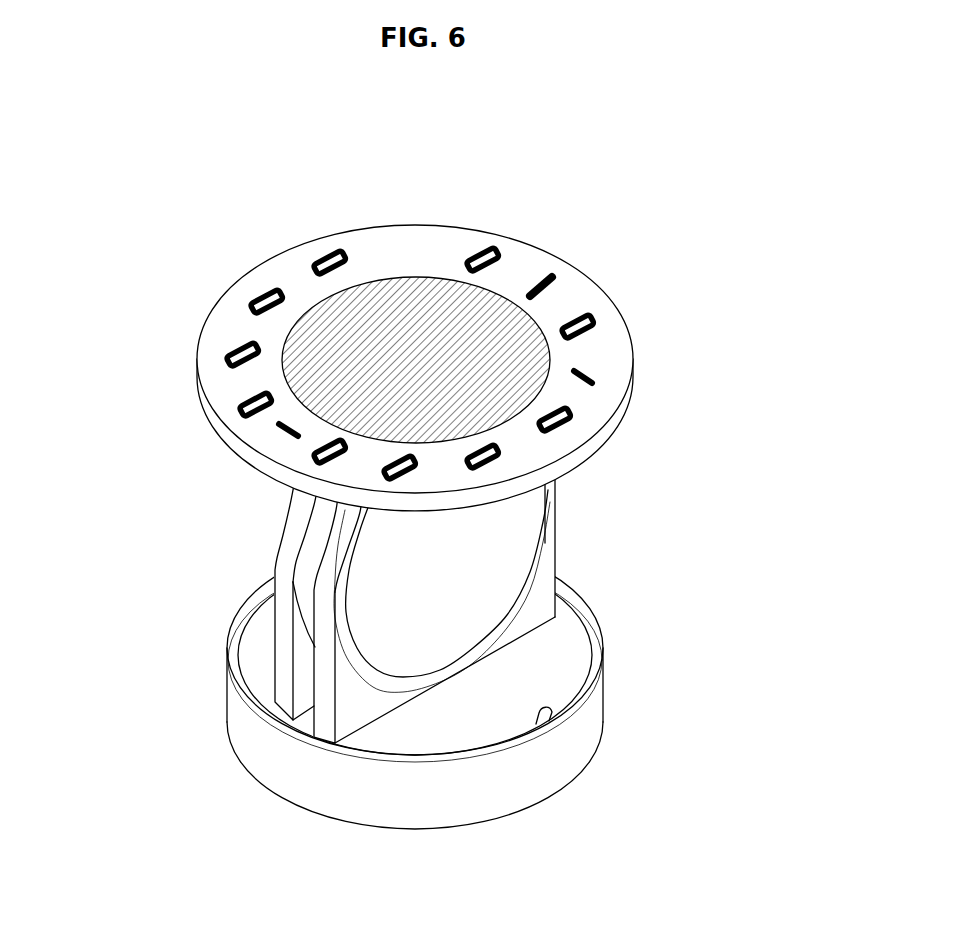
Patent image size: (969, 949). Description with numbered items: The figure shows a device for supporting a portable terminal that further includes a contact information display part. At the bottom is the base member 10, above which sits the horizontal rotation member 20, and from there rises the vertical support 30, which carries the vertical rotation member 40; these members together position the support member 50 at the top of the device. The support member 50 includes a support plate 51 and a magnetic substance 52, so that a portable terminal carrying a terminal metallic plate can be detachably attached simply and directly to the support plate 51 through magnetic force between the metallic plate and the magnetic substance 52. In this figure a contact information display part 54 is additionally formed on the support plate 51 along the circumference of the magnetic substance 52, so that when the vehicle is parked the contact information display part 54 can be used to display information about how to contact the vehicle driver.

The base member 10 is at (567, 793).
The horizontal rotation member 20 is at (564, 662).
The vertical support 30 is at (567, 528).
The vertical rotation member 40 is at (305, 539).
The support member 50 is at (415, 317).
The support plate 51 is at (202, 413).
The magnetic substance 52 is at (303, 350).
The contact information display part 54 is at (604, 322).